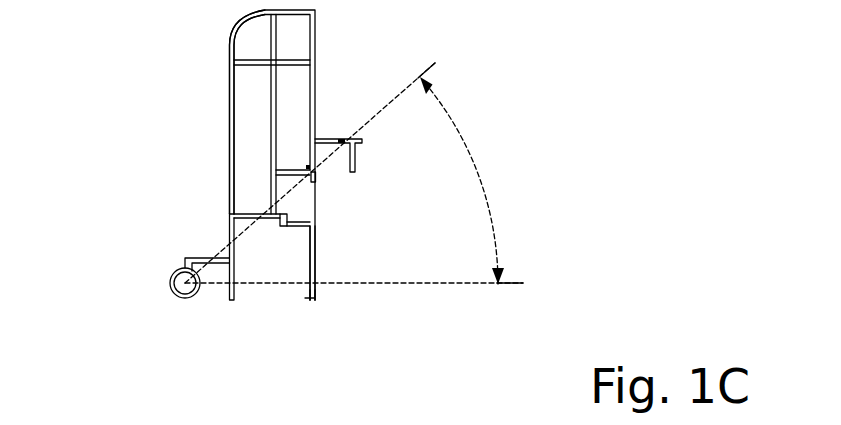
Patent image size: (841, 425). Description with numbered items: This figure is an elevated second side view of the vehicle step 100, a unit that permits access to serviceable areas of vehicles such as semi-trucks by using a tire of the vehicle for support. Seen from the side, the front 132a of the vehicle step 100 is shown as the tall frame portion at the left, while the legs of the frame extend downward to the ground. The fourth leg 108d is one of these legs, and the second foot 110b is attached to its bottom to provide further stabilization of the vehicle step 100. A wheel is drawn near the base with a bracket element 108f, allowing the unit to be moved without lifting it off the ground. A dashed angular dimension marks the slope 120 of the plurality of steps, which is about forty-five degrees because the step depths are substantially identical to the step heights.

The vehicle step 100 is at (398, 44).
The front 132a is at (216, 114).
The wheel 108f is at (179, 270).
The fourth leg 108d is at (234, 302).
The second foot 110b is at (317, 303).
The slope 120 is at (354, 173).